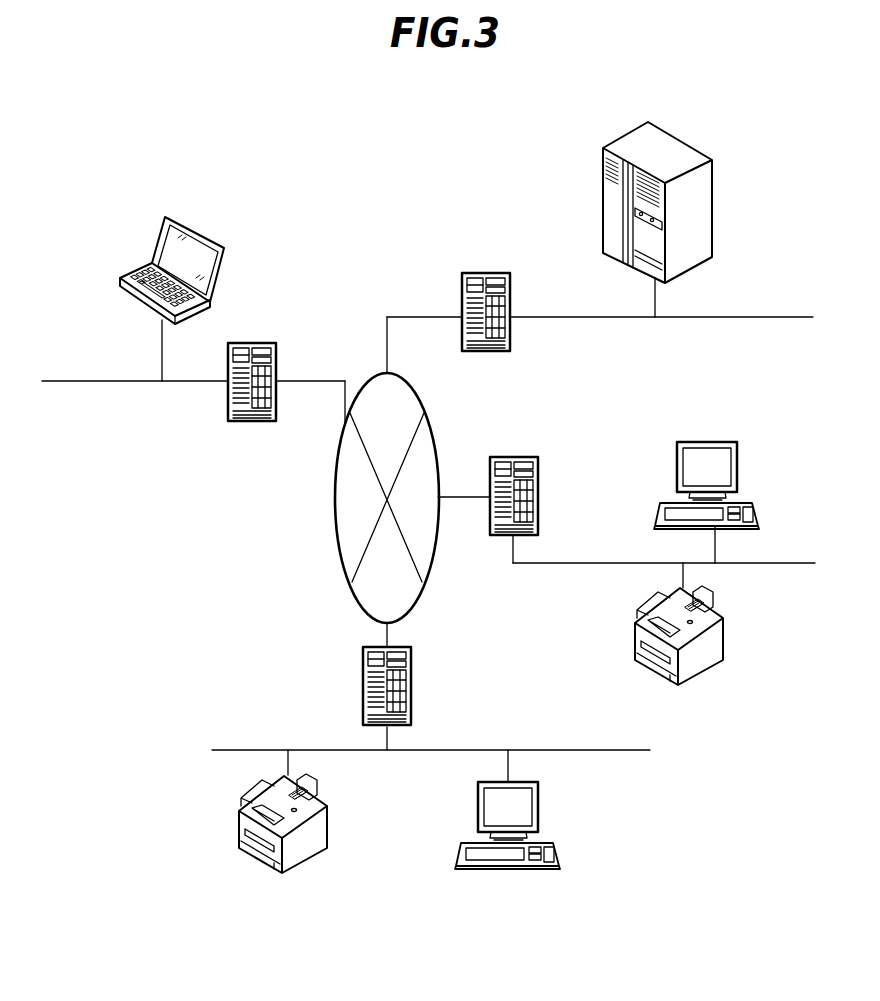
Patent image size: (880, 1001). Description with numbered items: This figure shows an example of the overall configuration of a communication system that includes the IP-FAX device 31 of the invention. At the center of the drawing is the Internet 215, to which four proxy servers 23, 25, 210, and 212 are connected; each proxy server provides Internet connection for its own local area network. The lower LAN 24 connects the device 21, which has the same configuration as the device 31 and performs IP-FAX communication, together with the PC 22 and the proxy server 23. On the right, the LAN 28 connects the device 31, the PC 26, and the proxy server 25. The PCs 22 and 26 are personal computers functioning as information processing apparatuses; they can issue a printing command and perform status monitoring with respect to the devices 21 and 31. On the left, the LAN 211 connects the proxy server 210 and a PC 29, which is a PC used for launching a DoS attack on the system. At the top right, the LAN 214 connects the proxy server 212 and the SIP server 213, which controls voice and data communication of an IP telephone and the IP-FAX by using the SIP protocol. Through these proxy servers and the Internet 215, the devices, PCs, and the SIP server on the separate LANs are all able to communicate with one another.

The device 21 is at (328, 819).
The PC 22 is at (541, 805).
The proxy server 23 is at (411, 666).
The LAN 24 is at (587, 750).
The proxy server 25 is at (528, 457).
The PC 26 is at (712, 442).
The LAN 28 is at (790, 563).
The PC 29 is at (208, 237).
The device 31 is at (724, 631).
The proxy server 210 is at (253, 343).
The LAN 211 is at (85, 363).
The proxy server 212 is at (496, 273).
The SIP server 213 is at (706, 130).
The LAN 214 is at (777, 302).
The Internet 215 is at (430, 423).